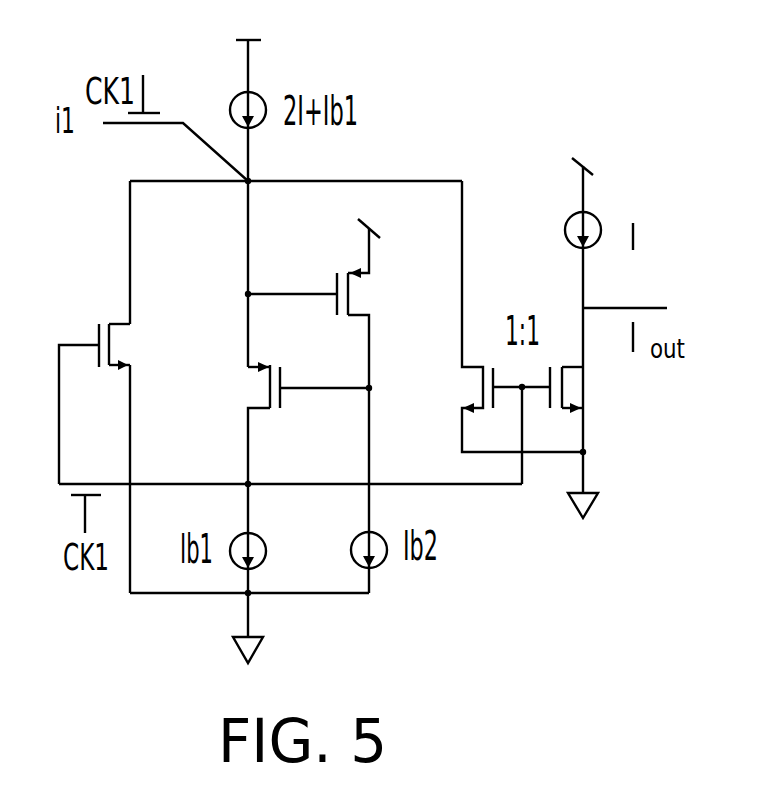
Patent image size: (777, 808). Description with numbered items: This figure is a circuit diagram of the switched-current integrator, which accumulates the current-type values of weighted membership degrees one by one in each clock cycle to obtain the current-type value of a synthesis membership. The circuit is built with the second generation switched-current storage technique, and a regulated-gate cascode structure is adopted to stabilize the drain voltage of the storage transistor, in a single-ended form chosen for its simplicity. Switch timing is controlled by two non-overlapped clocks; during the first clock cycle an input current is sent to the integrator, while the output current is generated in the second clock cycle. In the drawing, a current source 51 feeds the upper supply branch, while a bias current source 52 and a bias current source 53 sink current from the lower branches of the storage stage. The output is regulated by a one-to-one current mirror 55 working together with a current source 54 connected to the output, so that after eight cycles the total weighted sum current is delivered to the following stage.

The current source supplying 2I+Ib1 51 is at (262, 93).
The bias current source Ib1 52 is at (232, 566).
The bias current source Ib2 53 is at (378, 566).
The output current source 54 is at (601, 224).
The 1:1 current mirror 55 is at (523, 373).